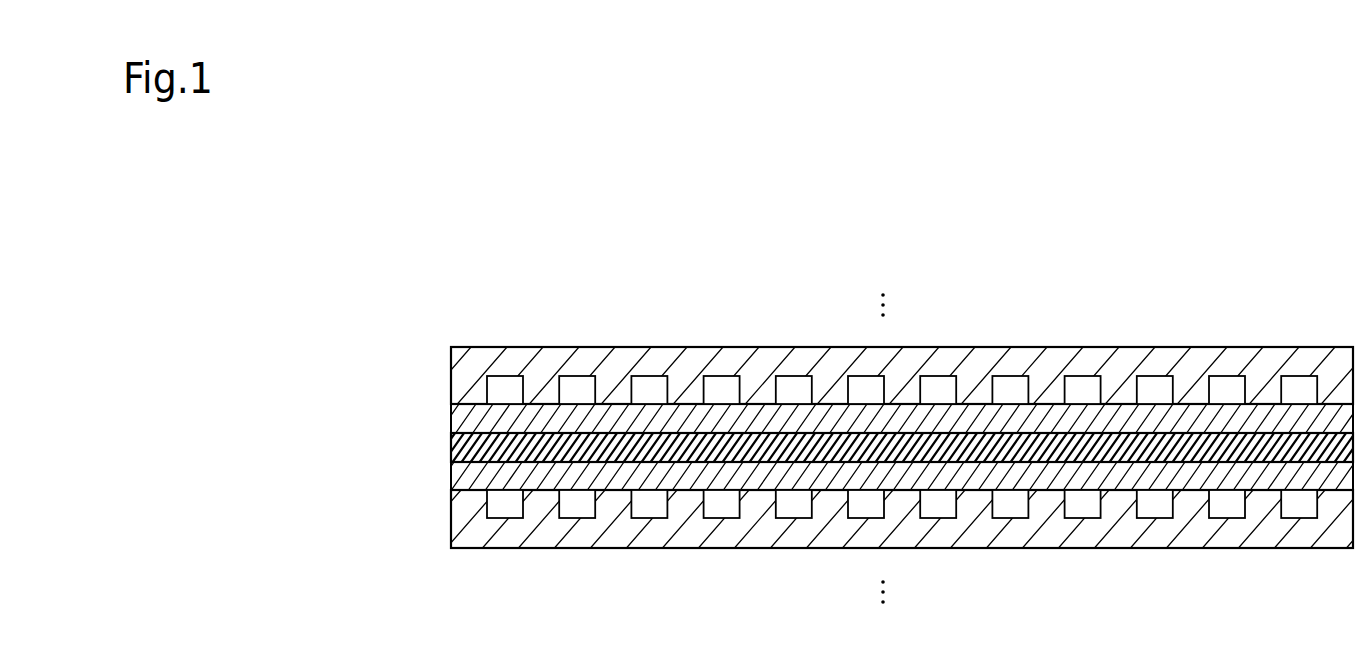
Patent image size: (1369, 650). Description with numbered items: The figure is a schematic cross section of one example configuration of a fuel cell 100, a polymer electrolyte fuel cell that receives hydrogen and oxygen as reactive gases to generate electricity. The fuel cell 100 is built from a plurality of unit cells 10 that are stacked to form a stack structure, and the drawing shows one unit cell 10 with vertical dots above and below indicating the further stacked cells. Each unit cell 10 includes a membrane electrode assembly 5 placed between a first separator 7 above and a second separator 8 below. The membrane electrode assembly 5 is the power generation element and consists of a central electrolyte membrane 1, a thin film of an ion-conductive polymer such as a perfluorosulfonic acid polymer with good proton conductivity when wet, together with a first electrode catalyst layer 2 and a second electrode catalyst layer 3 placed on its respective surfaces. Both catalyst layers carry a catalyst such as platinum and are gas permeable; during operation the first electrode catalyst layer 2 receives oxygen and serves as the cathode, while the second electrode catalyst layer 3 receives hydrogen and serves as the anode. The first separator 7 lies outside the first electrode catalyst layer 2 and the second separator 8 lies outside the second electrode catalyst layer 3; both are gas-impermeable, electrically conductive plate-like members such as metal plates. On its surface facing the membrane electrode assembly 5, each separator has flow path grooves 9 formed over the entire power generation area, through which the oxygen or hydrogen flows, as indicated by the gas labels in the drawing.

The fuel cell 100 is at (325, 205).
The unit cell 10 is at (293, 305).
The membrane electrode assembly 5 is at (313, 372).
The electrolyte membrane 1 is at (452, 452).
The first electrode catalyst layer 2 is at (452, 428).
The second electrode catalyst layer 3 is at (452, 474).
The first separator 7 is at (465, 362).
The second separator 8 is at (474, 540).
The flow path grooves 9 is at (577, 383).